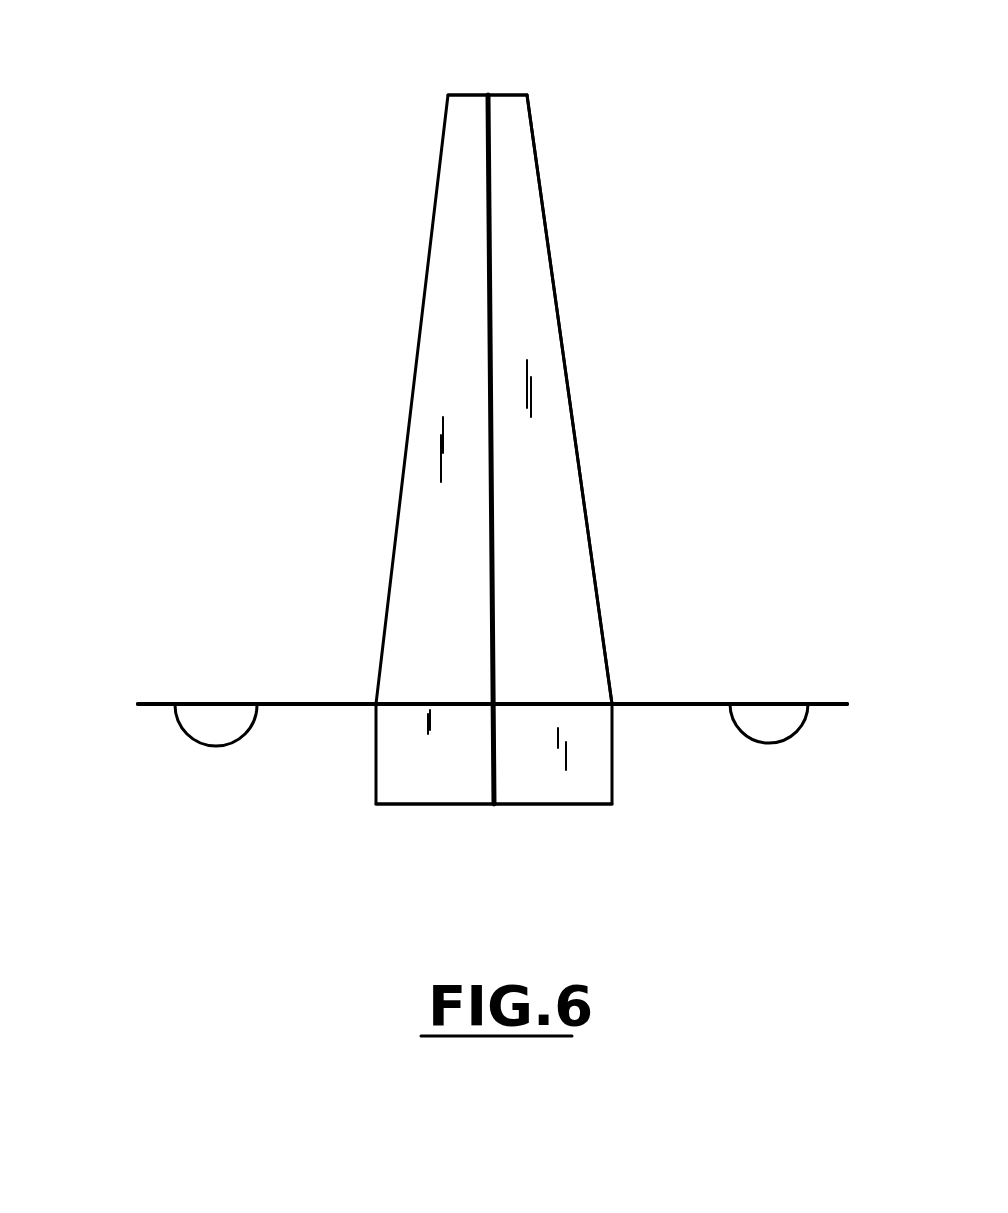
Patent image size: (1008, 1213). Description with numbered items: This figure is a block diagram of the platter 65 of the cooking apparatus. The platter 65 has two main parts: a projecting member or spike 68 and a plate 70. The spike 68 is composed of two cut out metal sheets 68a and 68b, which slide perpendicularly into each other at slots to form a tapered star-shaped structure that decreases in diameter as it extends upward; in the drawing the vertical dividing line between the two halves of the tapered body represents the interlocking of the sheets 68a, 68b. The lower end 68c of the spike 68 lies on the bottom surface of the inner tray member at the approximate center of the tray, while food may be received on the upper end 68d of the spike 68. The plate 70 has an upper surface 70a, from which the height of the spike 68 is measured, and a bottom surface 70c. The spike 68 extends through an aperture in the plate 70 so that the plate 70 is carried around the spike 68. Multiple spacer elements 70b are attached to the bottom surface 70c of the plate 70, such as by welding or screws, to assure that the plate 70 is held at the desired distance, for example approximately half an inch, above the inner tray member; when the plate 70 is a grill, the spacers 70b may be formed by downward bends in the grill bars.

The platter 65 is at (275, 355).
The spike 68 is at (553, 279).
The cut out metal sheet 68a is at (495, 632).
The cut out metal sheet 68b is at (598, 590).
The lower end of spike 68c is at (563, 804).
The upper end of spike 68d is at (478, 95).
The plate 70 is at (138, 704).
The surface of plate 70a is at (298, 704).
The spacer elements 70b is at (247, 733).
The bottom surface of plate 70c is at (705, 705).